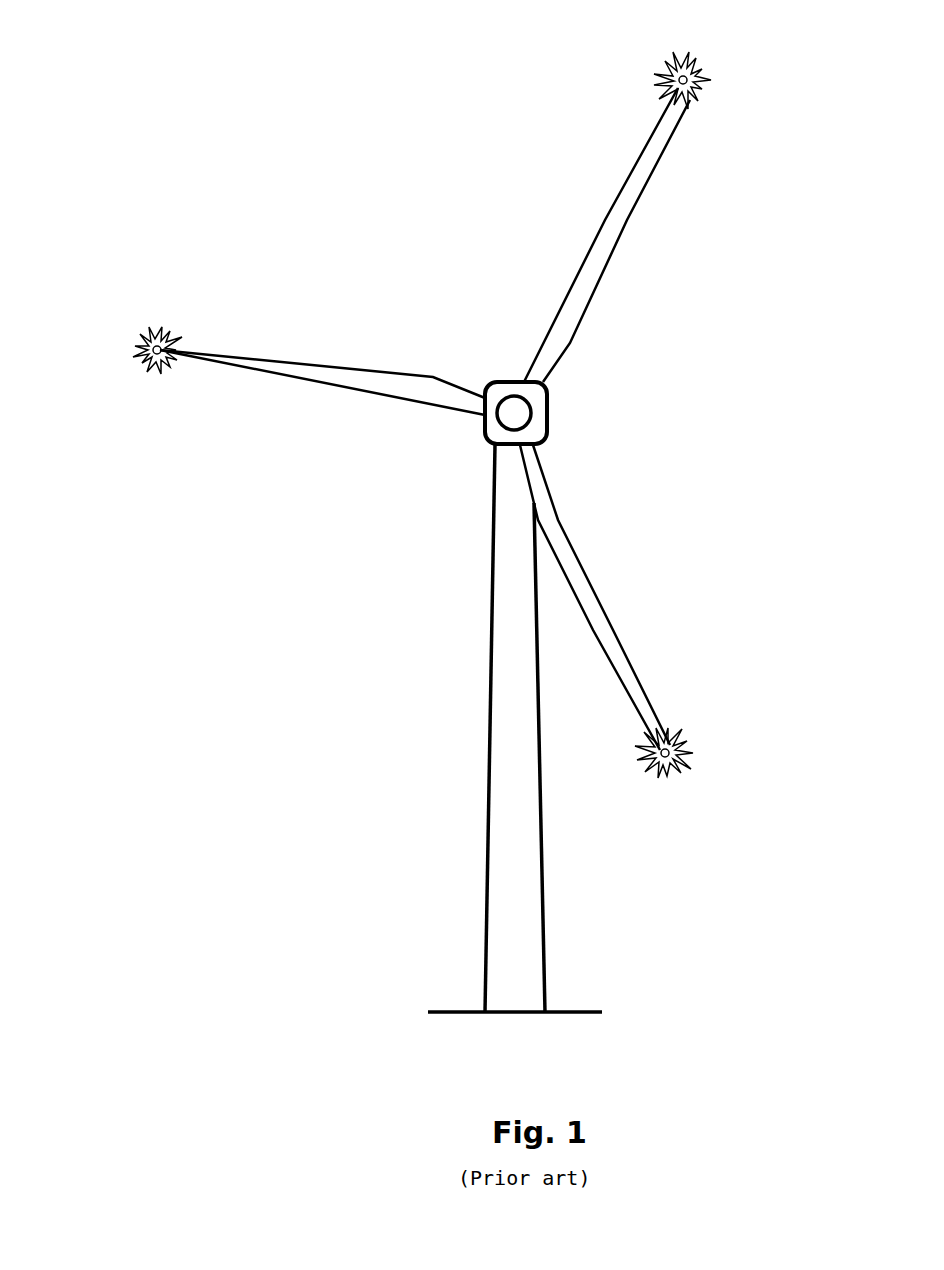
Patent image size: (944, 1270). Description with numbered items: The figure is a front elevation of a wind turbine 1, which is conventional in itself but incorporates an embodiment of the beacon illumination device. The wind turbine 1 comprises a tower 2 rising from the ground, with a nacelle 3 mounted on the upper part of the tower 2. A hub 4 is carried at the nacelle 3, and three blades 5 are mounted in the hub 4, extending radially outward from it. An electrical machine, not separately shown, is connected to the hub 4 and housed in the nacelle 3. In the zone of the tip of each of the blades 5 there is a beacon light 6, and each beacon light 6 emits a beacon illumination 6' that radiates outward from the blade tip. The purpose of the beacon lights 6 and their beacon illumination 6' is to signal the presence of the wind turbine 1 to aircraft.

The wind turbine 1 is at (292, 116).
The tower 2 is at (489, 738).
The nacelle 3 is at (486, 441).
The hub 4 is at (522, 413).
The blades 5 is at (608, 260).
The beacon light 6 is at (486, 415).
The beacon illumination 6' is at (405, 416).